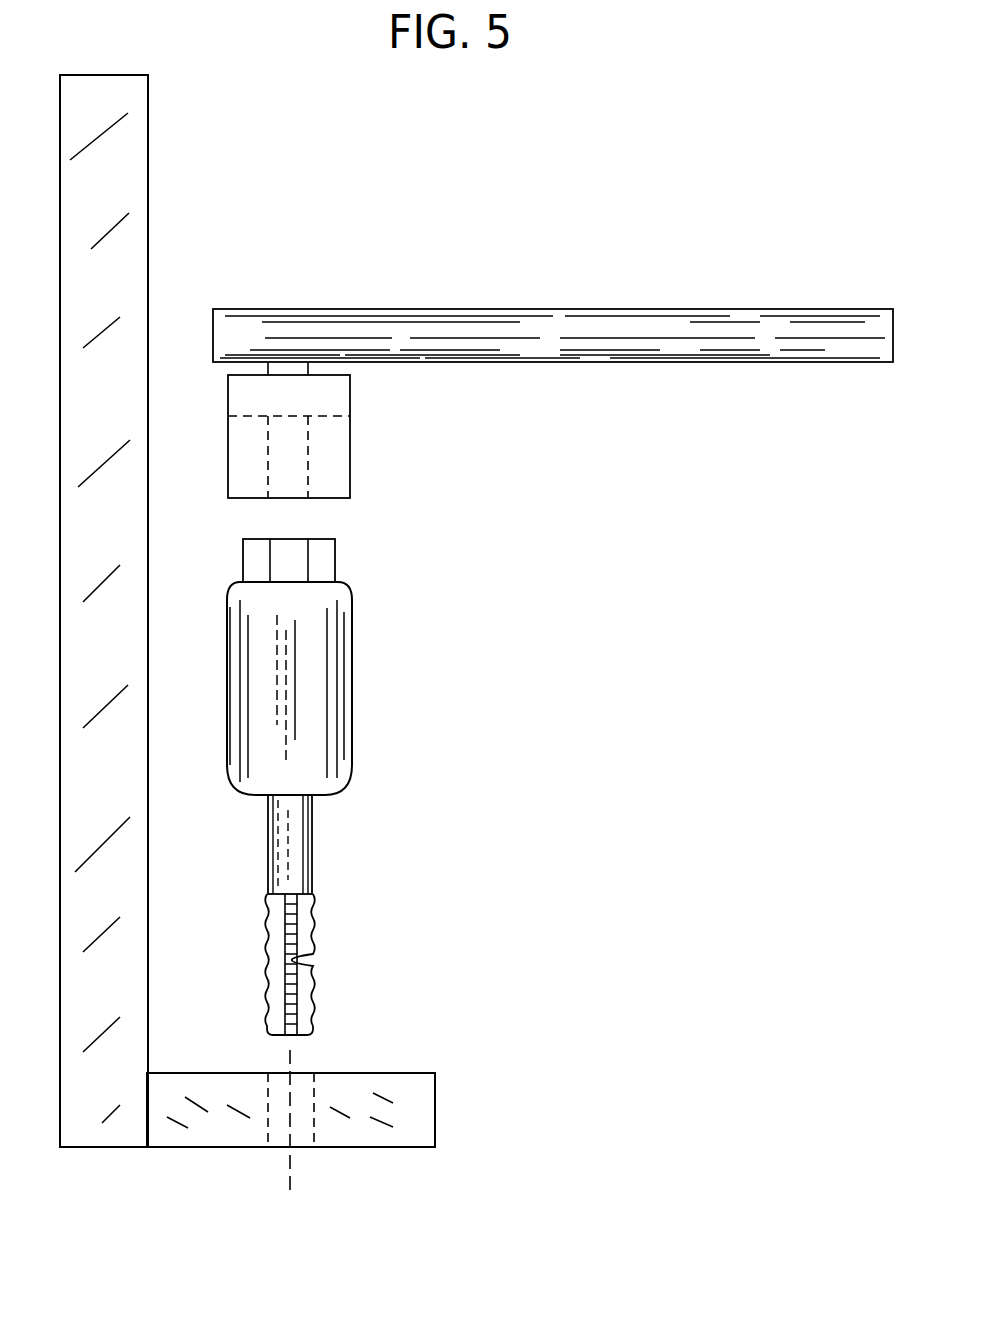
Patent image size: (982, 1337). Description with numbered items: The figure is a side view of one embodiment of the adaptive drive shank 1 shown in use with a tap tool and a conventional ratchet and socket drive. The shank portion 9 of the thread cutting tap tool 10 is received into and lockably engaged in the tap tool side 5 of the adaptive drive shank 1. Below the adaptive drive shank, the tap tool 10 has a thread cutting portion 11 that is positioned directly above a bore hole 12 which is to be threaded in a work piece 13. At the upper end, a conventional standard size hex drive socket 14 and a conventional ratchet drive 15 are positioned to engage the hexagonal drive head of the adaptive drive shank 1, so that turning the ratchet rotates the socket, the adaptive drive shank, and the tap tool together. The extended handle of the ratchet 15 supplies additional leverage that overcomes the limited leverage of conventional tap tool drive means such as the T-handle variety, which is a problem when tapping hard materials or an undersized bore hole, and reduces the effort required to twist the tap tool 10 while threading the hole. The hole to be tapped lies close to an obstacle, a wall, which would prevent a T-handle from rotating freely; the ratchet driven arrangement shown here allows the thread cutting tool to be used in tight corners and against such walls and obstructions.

The adaptive drive shank 1 is at (365, 704).
The tap tool side 5 is at (325, 797).
The shank portion 9 is at (285, 872).
The thread cutting tap tool 10 is at (362, 916).
The thread cutting portion 11 is at (313, 998).
The bore hole 12 is at (300, 1087).
The work piece 13 is at (415, 1115).
The hex drive socket 14 is at (120, 150).
The ratchet drive 15 is at (747, 332).